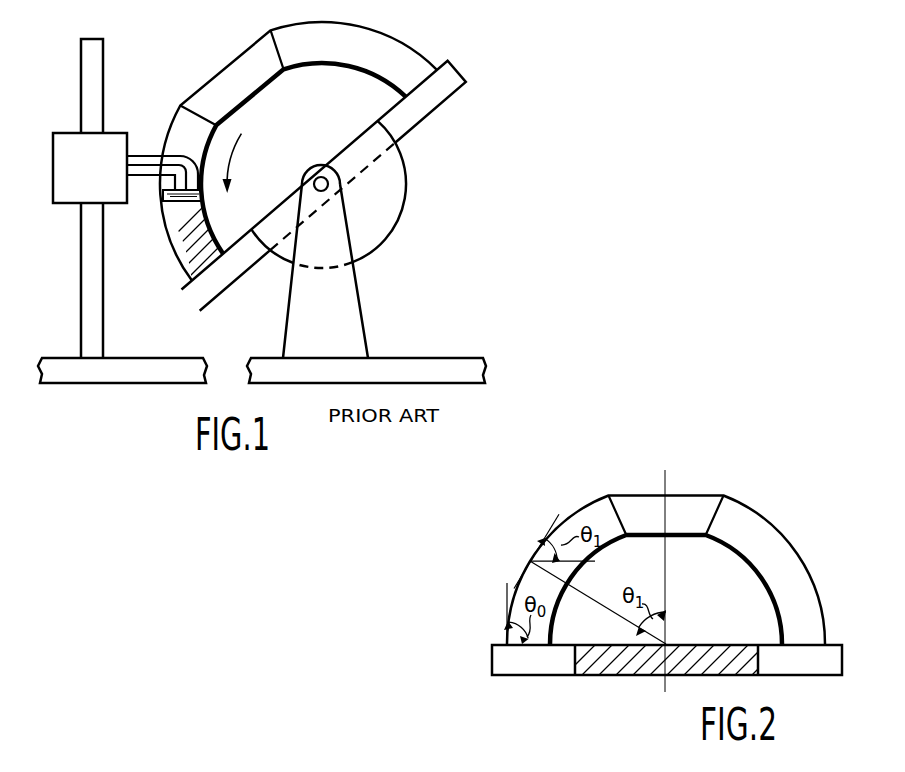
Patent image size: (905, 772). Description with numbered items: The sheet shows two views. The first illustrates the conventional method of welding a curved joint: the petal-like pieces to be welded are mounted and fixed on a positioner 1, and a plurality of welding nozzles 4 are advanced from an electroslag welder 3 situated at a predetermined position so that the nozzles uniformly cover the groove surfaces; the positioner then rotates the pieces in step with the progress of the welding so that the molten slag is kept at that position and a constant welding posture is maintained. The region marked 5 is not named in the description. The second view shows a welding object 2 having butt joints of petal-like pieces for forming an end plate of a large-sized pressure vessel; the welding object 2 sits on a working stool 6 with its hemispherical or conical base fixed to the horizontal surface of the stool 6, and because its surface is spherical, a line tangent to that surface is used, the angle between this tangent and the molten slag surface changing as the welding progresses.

In FIG. 1, the positioner 1 is at (397, 203).
In FIG. 1, the welding object 2 is at (390, 48).
In FIG. 2, the welding object 2 is at (772, 542).
In FIG. 1, the electroslag welder 3 is at (98, 178).
In FIG. 1, the welding nozzles 4 is at (142, 165).
In FIG. 1, the coolant nozzle with fluid 5 is at (162, 207).
In FIG. 2, the working stool 6 is at (820, 657).